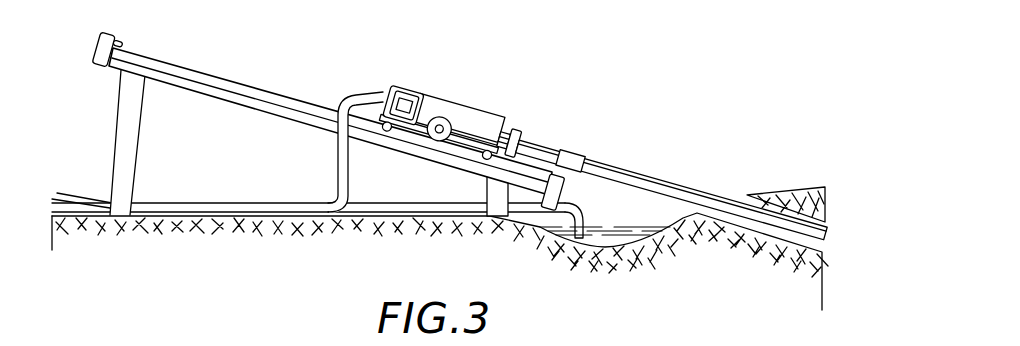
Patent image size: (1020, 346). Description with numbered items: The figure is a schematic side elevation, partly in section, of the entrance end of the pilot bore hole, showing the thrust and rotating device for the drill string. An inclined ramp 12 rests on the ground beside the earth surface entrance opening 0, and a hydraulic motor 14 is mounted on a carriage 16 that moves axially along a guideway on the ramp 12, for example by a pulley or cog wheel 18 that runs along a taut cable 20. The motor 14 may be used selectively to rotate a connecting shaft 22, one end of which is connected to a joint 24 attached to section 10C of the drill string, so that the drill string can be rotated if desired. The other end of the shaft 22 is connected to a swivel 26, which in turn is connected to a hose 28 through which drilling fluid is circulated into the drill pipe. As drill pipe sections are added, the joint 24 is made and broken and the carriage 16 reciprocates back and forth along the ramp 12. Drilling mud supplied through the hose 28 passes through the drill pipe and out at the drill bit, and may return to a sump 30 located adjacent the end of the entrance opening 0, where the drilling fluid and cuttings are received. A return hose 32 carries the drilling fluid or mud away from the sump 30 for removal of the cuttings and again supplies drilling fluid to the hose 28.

The entrance opening 0 is at (735, 194).
The drill string section 10C is at (647, 173).
The inclined ramp 12 is at (185, 92).
The hydraulic motor 14 is at (437, 102).
The carriage 16 is at (489, 101).
The pulley or cog wheel 18 is at (446, 118).
The taut cable 20 is at (282, 93).
The connecting shaft 22 is at (521, 138).
The joint 24 is at (573, 152).
The swivel 26 is at (402, 88).
The hose 28 is at (338, 162).
The sump 30 is at (633, 217).
The return hose 32 is at (410, 203).